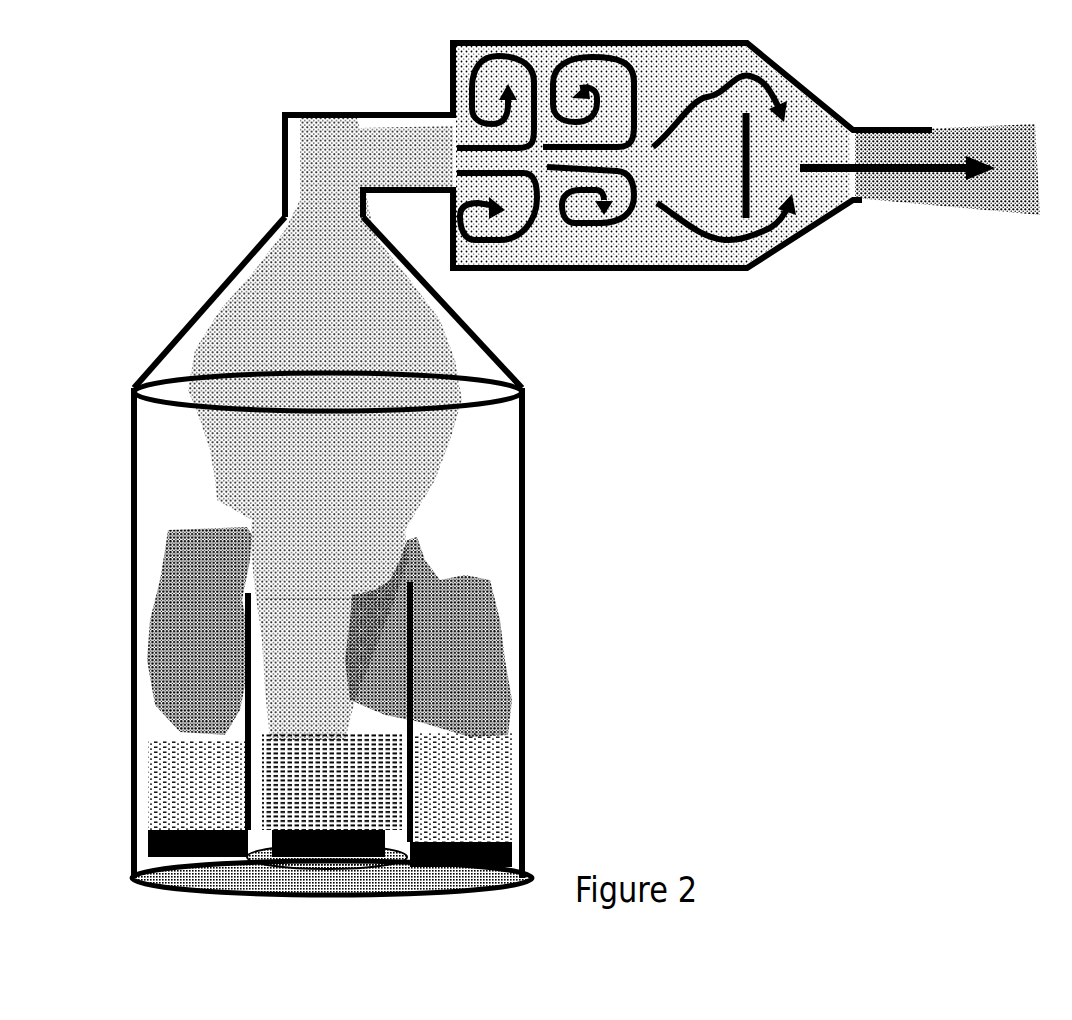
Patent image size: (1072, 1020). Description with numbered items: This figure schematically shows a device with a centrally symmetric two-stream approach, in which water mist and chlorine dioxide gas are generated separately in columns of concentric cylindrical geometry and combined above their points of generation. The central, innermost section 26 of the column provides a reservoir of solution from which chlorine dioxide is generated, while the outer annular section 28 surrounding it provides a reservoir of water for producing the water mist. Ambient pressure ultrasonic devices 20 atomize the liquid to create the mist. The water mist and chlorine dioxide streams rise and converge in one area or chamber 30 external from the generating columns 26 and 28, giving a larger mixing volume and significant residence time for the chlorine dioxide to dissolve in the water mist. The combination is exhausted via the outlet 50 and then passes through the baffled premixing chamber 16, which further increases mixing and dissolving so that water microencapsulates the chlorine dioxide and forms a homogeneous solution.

The baffled premixing chamber 16 is at (695, 270).
The outlet 50 is at (856, 182).
The chamber 30 is at (322, 403).
The central innermost section 26 is at (350, 680).
The outer annular section 28 is at (147, 585).
The ambient pressure ultrasonic device 20 is at (292, 830).